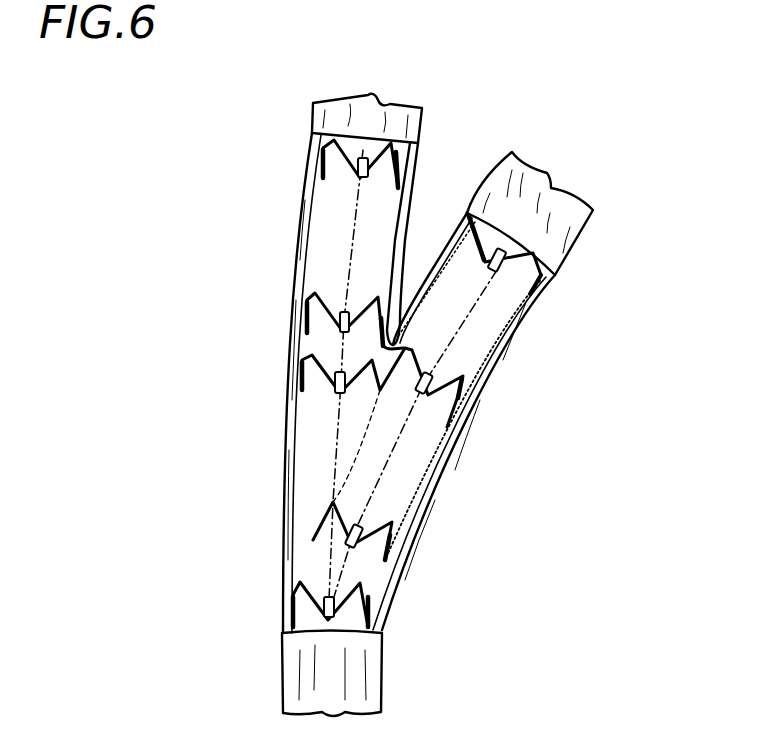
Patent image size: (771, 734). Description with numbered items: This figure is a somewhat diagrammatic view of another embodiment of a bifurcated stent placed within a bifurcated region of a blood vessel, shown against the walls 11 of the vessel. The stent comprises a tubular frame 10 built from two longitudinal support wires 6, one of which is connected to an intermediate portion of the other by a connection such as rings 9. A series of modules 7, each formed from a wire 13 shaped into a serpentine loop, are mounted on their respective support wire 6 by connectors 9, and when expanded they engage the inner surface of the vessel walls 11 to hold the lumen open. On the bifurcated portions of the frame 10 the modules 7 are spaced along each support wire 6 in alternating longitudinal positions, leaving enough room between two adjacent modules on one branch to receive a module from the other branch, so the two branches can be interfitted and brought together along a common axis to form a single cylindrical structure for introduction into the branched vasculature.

The longitudinal support wire 6 is at (350, 228).
The module 7 is at (326, 148).
The connector 9 is at (333, 390).
The tubular frame 10 is at (313, 342).
The wall of the body lumen 11 is at (306, 264).
The wire 13 is at (548, 270).